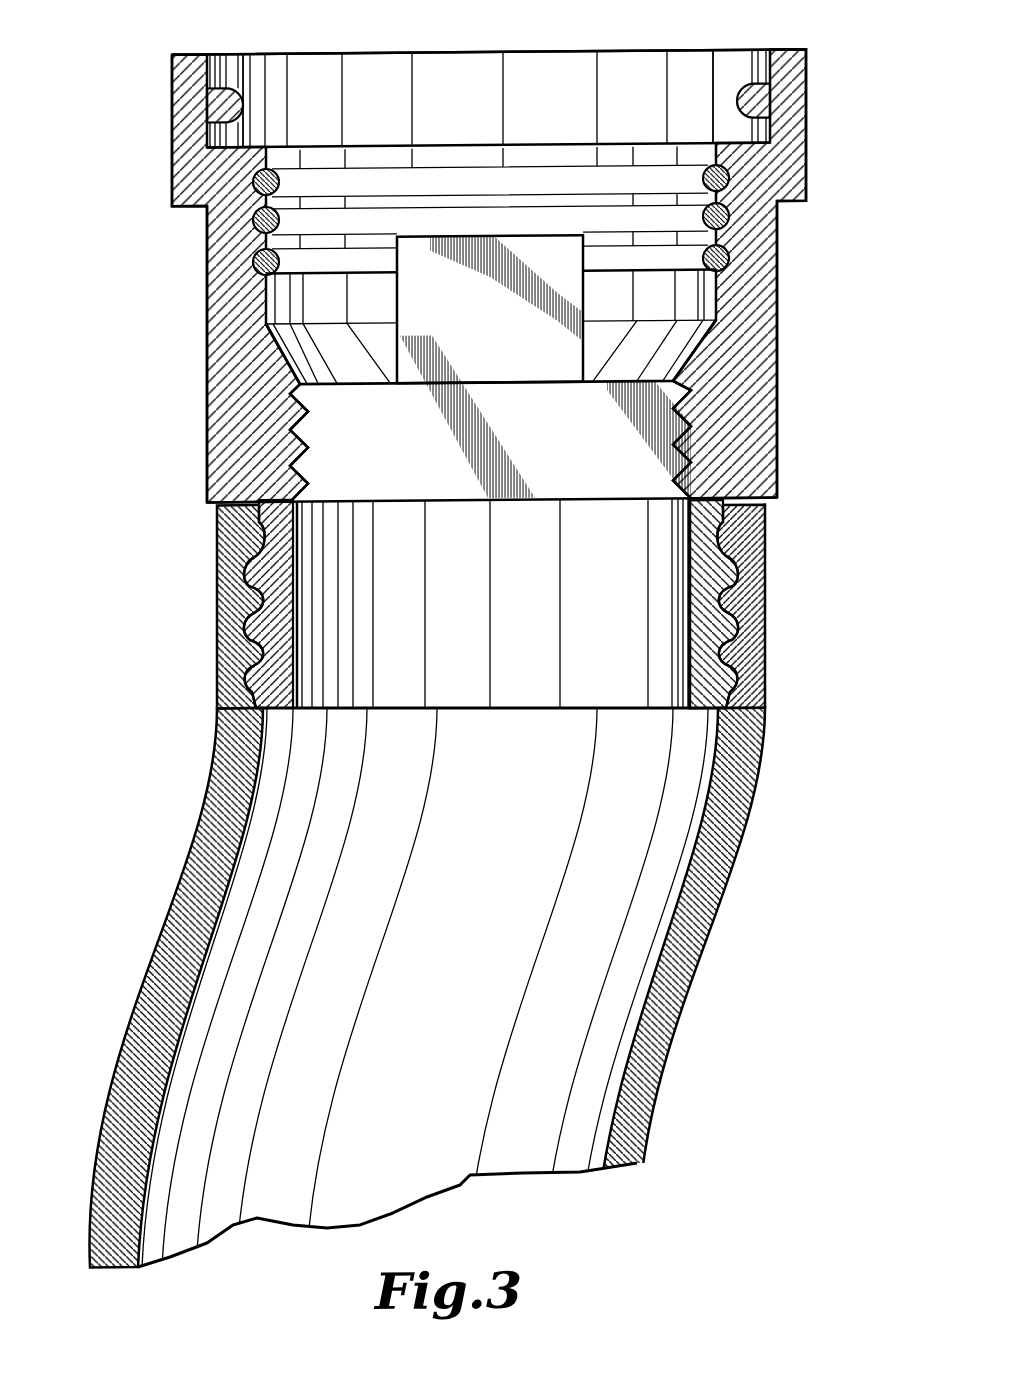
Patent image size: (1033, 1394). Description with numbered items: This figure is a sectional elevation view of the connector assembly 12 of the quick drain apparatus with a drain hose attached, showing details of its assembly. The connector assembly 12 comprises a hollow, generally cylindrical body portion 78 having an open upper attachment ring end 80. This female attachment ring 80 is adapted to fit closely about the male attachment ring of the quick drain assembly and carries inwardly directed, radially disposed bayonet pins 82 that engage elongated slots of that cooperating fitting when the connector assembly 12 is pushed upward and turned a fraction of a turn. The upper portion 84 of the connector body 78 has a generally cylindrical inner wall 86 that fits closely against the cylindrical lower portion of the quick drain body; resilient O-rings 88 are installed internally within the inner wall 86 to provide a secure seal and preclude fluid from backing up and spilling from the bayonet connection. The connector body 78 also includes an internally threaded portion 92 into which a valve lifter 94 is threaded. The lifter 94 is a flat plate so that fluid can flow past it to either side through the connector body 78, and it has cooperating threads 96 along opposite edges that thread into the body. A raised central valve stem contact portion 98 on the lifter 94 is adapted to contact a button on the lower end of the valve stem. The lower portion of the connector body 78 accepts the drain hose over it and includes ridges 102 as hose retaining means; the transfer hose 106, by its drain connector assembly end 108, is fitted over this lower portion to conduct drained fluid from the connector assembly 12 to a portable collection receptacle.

The connector assembly portion 12 is at (172, 342).
The body portion 78 is at (778, 380).
The attachment ring end 80 is at (808, 60).
The bayonet pins 82 is at (233, 76).
The upper portion 84 is at (778, 264).
The inner wall 86 is at (707, 299).
The O-rings 88 is at (613, 246).
The internally threaded portion 92 is at (663, 501).
The valve lifter 94 is at (531, 396).
The threads 96 is at (683, 445).
The valve stem contact portion 98 is at (480, 236).
The ridges 102 is at (224, 630).
The transfer hose 106 is at (657, 1074).
The drain connector assembly end 108 is at (772, 615).